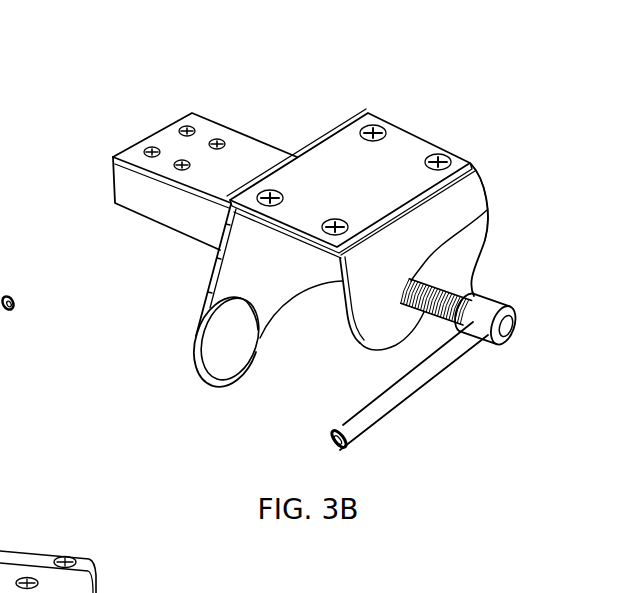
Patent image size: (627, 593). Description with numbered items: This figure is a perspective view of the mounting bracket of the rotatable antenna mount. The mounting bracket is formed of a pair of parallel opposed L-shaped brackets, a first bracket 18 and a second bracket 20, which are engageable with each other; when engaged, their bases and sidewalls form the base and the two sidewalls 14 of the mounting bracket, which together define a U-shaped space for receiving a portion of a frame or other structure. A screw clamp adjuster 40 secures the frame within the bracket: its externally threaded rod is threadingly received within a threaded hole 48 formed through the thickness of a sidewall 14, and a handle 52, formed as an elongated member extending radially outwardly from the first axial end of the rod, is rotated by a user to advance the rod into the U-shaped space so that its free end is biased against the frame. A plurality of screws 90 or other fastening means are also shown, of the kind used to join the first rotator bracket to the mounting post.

The sidewall 14 is at (363, 318).
The first bracket 18 is at (228, 287).
The second bracket 20 is at (474, 238).
The screw clamp adjuster 40 is at (524, 391).
The threaded hole 48 is at (487, 210).
The handle 52 is at (360, 427).
The screws 90 is at (217, 139).